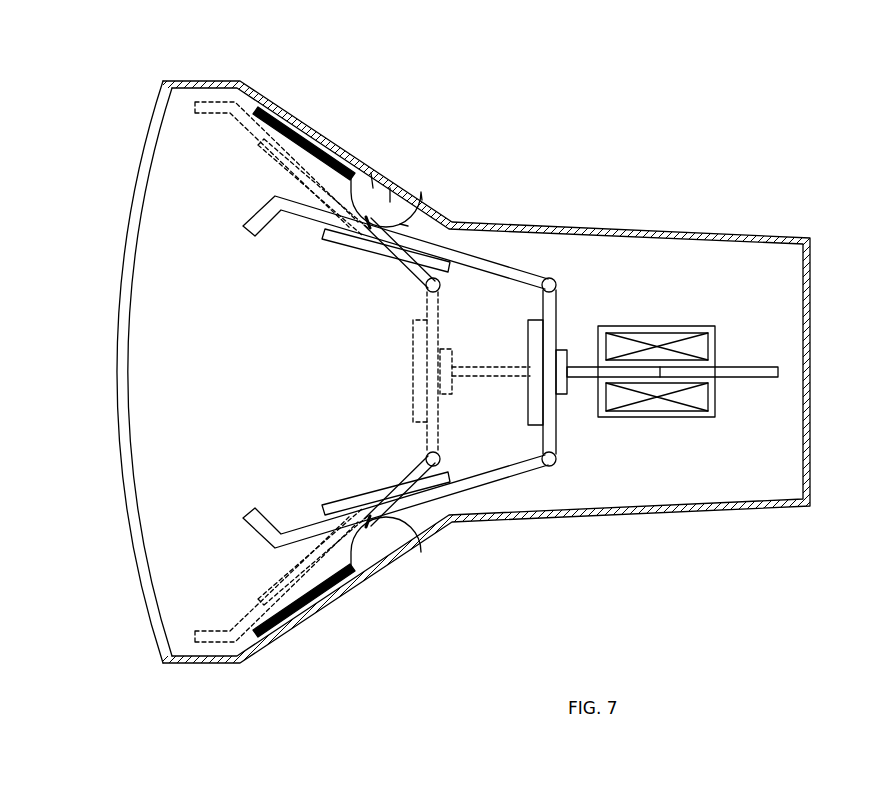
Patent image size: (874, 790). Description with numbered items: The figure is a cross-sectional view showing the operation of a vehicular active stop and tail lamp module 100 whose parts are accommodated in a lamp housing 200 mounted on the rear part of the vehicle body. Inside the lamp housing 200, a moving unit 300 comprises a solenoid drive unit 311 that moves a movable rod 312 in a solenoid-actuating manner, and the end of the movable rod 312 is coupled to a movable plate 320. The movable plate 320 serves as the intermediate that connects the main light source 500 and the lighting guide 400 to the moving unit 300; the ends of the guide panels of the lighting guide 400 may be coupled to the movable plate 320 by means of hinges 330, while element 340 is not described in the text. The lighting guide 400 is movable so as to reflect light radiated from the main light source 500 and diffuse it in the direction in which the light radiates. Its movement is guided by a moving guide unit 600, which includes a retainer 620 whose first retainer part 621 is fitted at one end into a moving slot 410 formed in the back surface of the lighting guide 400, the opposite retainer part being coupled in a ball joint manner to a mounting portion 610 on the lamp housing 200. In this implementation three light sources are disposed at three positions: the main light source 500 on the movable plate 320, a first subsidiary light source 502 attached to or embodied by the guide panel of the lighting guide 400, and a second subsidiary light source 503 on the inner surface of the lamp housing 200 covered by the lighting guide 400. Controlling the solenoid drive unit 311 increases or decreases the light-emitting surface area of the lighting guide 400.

The vehicular active stop and tail lamp module 100 is at (119, 114).
The lamp housing 200 is at (706, 231).
The moving unit 300 is at (703, 318).
The solenoid drive unit 311 is at (676, 418).
The movable rod 312 is at (765, 370).
The movable plate 320 is at (557, 422).
The hinge 330 is at (561, 348).
The connecting rod 340 is at (560, 335).
The lighting guide 400 is at (490, 266).
The moving slot 410 is at (258, 104).
The main light source 500 is at (533, 414).
The first subsidiary light source 502 is at (343, 500).
The second subsidiary light source 503 is at (360, 578).
The moving guide unit 600 is at (356, 200).
The mounting portion 610 is at (392, 186).
The retainer 620 is at (405, 222).
The first retainer part 621 is at (365, 194).